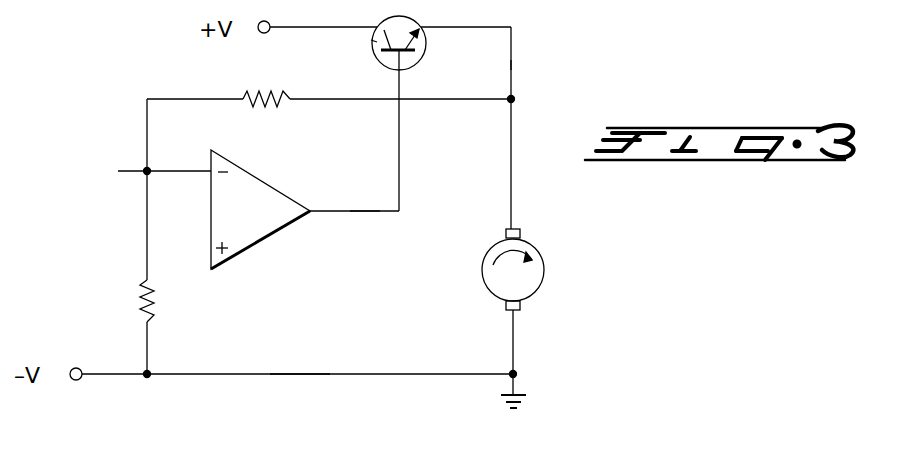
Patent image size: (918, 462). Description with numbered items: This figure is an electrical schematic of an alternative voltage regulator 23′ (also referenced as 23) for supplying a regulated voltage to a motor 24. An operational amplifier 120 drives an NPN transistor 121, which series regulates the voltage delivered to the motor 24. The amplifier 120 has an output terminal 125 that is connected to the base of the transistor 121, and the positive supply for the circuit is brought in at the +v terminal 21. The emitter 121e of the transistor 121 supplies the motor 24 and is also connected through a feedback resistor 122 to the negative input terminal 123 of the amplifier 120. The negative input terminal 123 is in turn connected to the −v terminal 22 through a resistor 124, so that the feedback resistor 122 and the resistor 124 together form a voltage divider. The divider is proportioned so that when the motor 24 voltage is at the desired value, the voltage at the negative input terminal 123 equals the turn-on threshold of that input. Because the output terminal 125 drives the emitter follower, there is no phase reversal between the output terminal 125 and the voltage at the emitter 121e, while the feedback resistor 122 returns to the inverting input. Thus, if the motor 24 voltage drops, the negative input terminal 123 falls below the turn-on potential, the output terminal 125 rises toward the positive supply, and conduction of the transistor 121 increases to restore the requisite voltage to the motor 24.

The positive supply terminal 21 is at (262, 33).
The −v terminal 22 is at (76, 380).
The alternative voltage regulator 23' is at (272, 403).
The ground line 23 is at (272, 403).
The motor 24 is at (528, 290).
The operational amplifier 120 is at (245, 243).
The NPN transistor 121 is at (373, 44).
The emitter 121e is at (513, 63).
The feedback resistor 122 is at (250, 96).
The negative input terminal 123 is at (140, 175).
The resistor 124 is at (142, 303).
The output terminal 125 is at (363, 214).